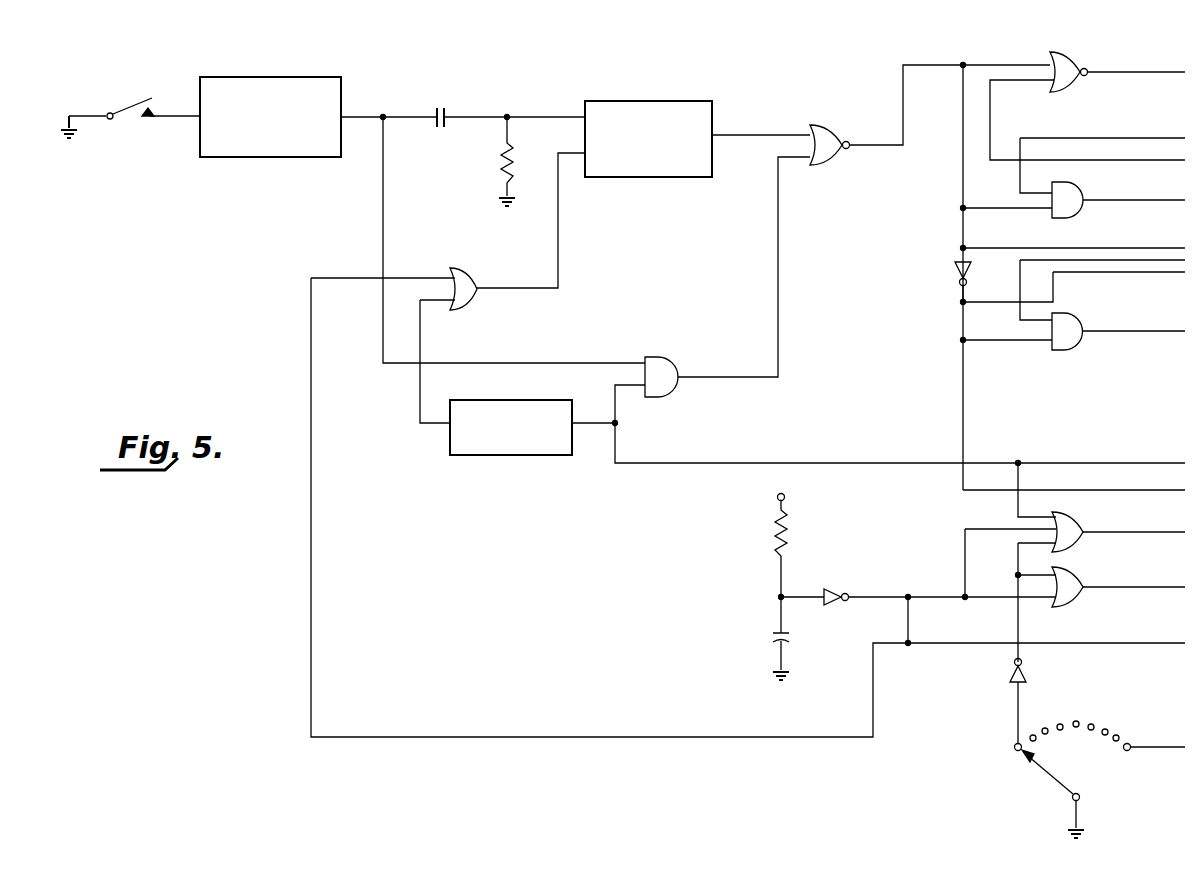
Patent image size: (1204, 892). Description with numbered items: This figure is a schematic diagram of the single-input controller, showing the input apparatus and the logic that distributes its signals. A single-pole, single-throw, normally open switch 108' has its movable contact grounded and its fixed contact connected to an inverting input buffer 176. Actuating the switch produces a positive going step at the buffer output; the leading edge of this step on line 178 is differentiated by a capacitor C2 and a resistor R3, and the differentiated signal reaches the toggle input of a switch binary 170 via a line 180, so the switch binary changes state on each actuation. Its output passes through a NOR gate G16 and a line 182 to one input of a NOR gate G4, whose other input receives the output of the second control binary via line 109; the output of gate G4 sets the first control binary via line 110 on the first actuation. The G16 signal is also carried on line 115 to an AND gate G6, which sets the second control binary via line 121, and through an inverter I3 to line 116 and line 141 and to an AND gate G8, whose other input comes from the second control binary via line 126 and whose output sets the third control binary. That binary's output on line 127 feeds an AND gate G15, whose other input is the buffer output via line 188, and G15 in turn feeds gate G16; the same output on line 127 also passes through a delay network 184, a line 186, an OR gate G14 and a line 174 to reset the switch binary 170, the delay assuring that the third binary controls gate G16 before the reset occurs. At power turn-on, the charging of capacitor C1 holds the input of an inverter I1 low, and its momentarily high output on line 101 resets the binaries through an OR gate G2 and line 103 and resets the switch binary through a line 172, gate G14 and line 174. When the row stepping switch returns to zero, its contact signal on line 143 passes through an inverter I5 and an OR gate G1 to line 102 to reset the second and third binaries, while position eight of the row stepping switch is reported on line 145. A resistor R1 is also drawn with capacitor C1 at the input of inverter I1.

The normally open switch 108' is at (130, 106).
The inverting input buffer 176 is at (298, 77).
The line 178 is at (398, 104).
The capacitor C2 is at (436, 106).
The line 180 is at (546, 106).
The resistor R3 is at (498, 158).
The switch binary 170 is at (662, 101).
The line 174 is at (558, 238).
The OR gate G14 is at (462, 268).
The line 188 is at (383, 350).
The line 172 is at (310, 370).
The line 186 is at (420, 426).
The delay network 184 is at (538, 470).
The AND gate G15 is at (666, 357).
The line 127 is at (748, 463).
The NOR gate G16 is at (834, 125).
The line 182 is at (903, 82).
The line 109 is at (1022, 92).
The line 115 is at (963, 172).
The inverter I3 is at (956, 262).
The NOR gate G4 is at (1065, 52).
The line 110 is at (1166, 72).
The AND gate G6 is at (1070, 184).
The line 121 is at (1170, 200).
The line 126 is at (1170, 260).
The line 116 is at (1172, 276).
The AND gate G8 is at (1066, 352).
The line 141 is at (963, 410).
The OR gate G2 is at (1070, 520).
The line 103 is at (1166, 532).
The OR gate G1 is at (1074, 572).
The line 102 is at (1166, 587).
The line 101 is at (876, 597).
The inverter I1 is at (828, 588).
The resistor R1 is at (770, 528).
The capacitor C1 is at (772, 636).
The inverter I5 is at (1014, 674).
The line 143 is at (1016, 710).
The line 145 is at (1168, 747).